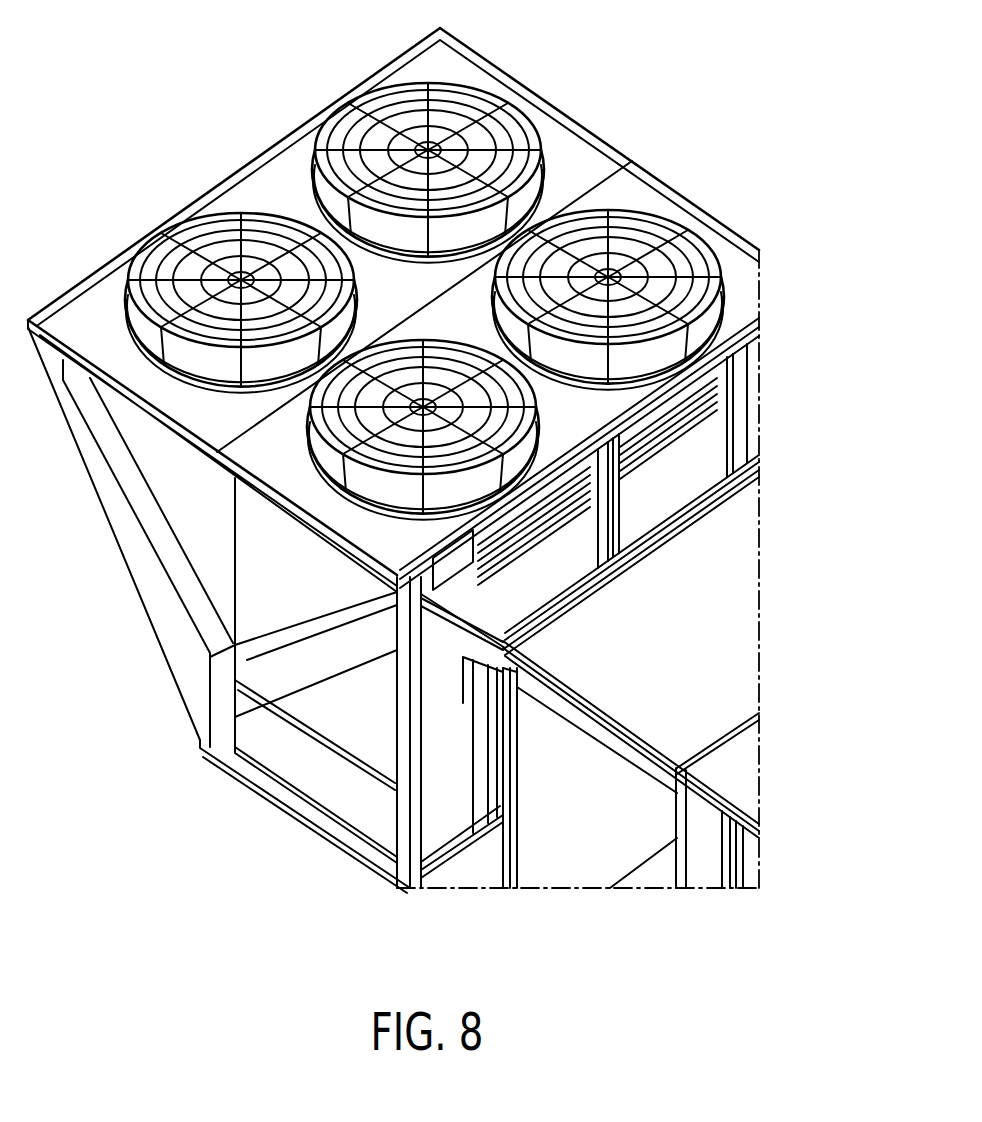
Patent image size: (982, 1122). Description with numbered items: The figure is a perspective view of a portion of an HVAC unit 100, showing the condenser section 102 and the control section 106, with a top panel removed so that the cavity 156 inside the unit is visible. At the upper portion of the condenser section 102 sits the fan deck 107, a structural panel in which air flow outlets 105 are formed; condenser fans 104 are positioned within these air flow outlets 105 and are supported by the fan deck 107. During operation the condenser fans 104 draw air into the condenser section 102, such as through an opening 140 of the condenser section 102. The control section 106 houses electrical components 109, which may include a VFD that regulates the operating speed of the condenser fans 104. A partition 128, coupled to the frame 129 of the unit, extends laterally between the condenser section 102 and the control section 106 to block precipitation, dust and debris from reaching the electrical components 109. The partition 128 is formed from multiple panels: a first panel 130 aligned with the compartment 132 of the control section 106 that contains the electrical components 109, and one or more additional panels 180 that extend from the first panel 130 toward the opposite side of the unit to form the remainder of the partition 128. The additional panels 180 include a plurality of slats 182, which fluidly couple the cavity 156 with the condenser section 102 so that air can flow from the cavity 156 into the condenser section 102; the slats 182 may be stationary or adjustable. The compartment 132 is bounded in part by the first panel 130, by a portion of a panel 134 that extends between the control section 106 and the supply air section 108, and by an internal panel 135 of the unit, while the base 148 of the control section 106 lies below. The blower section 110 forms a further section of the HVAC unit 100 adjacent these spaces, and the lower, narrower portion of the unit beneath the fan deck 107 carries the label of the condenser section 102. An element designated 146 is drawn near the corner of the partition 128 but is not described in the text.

The HVAC unit 100 is at (165, 71).
The condenser section 102 is at (197, 760).
The condenser fans 104 is at (483, 136).
The air flow outlets 105 is at (214, 239).
The control section 106 is at (421, 892).
The fan deck 107 is at (95, 309).
The supply air section 108 is at (596, 700).
The electrical components 109 is at (488, 695).
The blower section 110 is at (677, 892).
The partition 128 is at (726, 389).
The frame 129 is at (400, 658).
The first panel 130 is at (433, 697).
The compartment 132 is at (488, 876).
The panel 134 is at (602, 863).
The internal panel 135 is at (497, 607).
The opening 140 is at (297, 697).
The bracket 146 is at (456, 563).
The base 148 is at (492, 858).
The cavity 156 is at (714, 452).
The additional panels 180 is at (663, 493).
The slats 182 is at (672, 461).